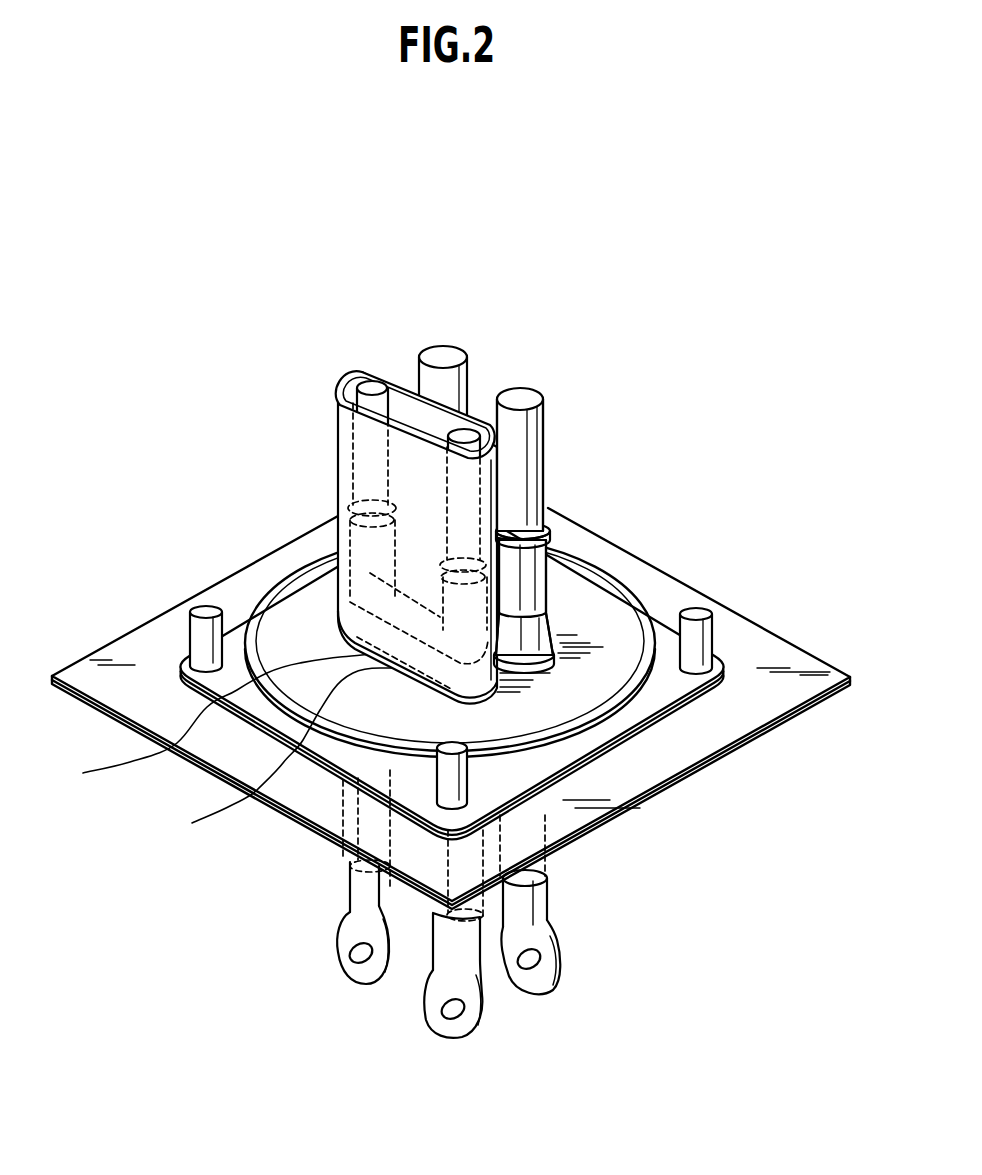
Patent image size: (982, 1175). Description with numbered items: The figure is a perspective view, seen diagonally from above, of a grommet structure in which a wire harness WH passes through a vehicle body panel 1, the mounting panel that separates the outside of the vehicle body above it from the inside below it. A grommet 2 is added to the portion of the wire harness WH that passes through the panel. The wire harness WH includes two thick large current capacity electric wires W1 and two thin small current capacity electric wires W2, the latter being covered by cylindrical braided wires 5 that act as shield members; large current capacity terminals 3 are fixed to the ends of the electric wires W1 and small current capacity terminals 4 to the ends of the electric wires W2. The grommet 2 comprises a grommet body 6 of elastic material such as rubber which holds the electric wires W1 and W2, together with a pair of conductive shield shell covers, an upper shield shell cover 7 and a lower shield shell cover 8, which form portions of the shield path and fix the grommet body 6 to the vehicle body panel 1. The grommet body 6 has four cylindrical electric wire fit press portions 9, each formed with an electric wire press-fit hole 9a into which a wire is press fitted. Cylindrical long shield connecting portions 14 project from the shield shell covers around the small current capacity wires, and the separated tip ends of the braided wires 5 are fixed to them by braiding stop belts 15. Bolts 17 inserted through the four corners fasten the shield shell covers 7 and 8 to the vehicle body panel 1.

The vehicle body panel 1 is at (777, 697).
The grommet 2 is at (268, 578).
The large current capacity terminals 3 is at (535, 995).
The small current capacity terminals 4 is at (362, 983).
The braided wires 5 is at (340, 448).
The grommet body 6 is at (552, 588).
The upper shield shell cover 7 is at (672, 688).
The lower shield shell cover 8 is at (655, 727).
The electric wire fit press portions 9 is at (590, 545).
The electric wire press-fit hole 9a is at (540, 480).
The shield connecting portions 14 is at (289, 756).
The braiding stop belts 15 is at (225, 721).
The bolts 17 is at (203, 633).
The large current capacity electric wires W1 is at (522, 393).
The small current capacity electric wires W2 is at (460, 430).
The wire harness WH is at (428, 318).